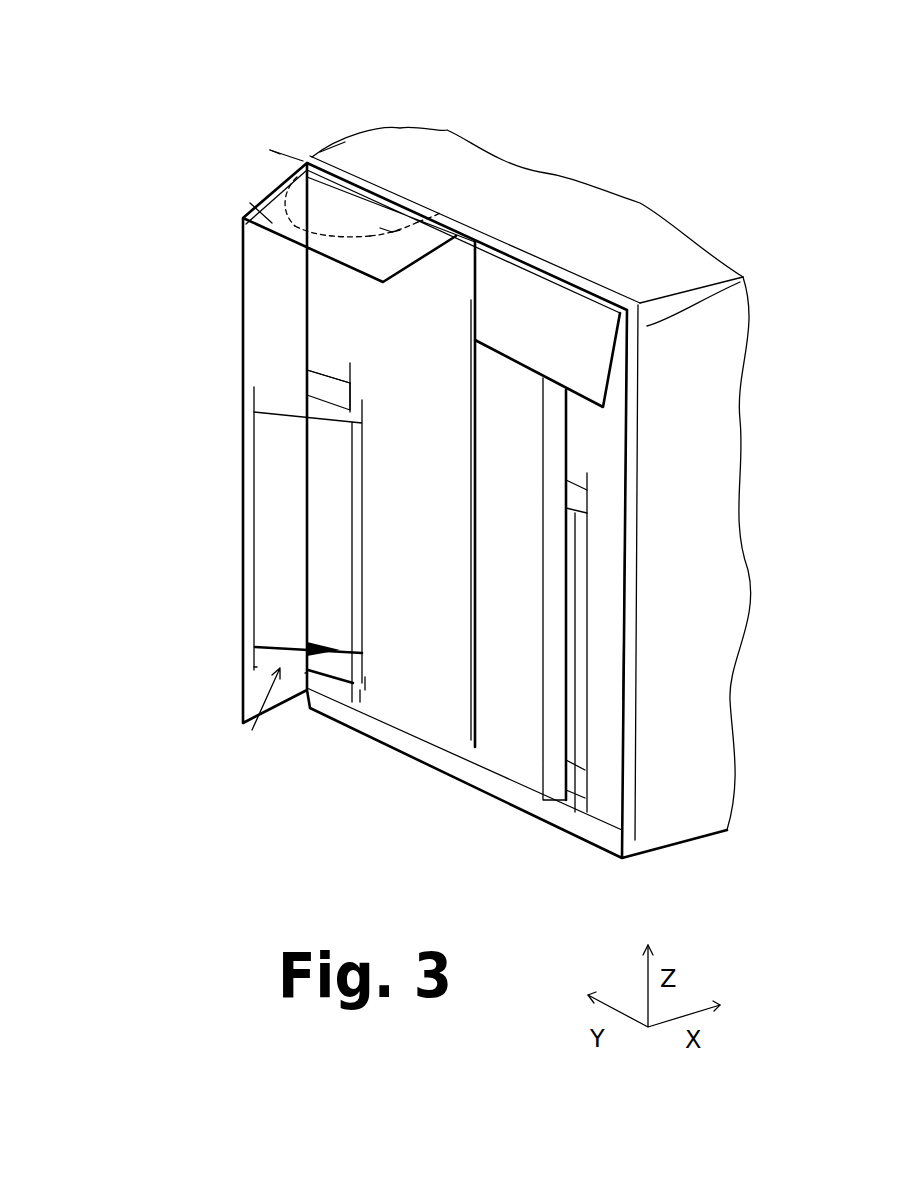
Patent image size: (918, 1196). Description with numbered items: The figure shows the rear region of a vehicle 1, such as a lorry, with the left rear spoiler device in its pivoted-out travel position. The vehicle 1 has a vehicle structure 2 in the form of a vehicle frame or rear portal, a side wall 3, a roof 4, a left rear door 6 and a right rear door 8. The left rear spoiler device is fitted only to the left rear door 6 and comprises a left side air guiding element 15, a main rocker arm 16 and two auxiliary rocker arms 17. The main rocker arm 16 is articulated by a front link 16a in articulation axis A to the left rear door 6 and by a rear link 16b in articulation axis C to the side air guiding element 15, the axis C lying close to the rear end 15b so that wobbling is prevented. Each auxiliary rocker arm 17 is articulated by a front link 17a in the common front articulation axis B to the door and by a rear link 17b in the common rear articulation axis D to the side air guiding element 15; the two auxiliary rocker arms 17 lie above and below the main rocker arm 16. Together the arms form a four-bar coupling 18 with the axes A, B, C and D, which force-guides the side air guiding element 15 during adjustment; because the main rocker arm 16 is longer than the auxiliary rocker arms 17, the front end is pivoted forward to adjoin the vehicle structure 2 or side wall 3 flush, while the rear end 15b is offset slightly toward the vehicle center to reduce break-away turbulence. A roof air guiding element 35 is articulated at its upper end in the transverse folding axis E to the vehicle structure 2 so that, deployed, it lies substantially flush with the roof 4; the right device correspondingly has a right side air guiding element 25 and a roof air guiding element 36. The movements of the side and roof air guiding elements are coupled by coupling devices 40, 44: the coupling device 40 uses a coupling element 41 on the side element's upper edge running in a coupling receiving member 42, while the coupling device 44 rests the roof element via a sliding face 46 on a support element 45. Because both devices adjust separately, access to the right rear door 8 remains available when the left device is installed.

The vehicle 1 is at (400, 125).
The vehicle structure 2 is at (632, 708).
The side wall 3 is at (742, 310).
The roof 4 is at (377, 153).
The left rear door 6 is at (447, 293).
The right rear door 8 is at (607, 445).
The left side air guiding element 15 is at (238, 247).
The rear end of the side air guiding element 15b is at (240, 618).
The main rocker arm 16 is at (282, 573).
The front link of the main rocker arm 16a is at (367, 632).
The rear link of the main rocker arm 16b is at (252, 440).
The auxiliary rocker arm 17 is at (320, 387).
The front link of the auxiliary rocker arm 17a is at (350, 378).
The rear link of the auxiliary rocker arm 17b is at (350, 383).
The four-bar coupling 18 is at (252, 730).
The right side air guiding element 25 is at (523, 770).
The roof air guiding element 35 is at (250, 203).
The roof air guiding element 36 is at (550, 313).
The coupling device 40 is at (267, 178).
The coupling element 41 is at (290, 178).
The coupling receiving member 42 is at (388, 230).
The coupling device 44 is at (332, 231).
The support element 45 is at (429, 217).
The sliding face 46 is at (396, 231).
The articulation axis A is at (365, 693).
The front articulation axis B is at (360, 703).
The rear articulation axis C is at (257, 667).
The rear articulation axis D is at (307, 673).
The folding axis E is at (278, 147).